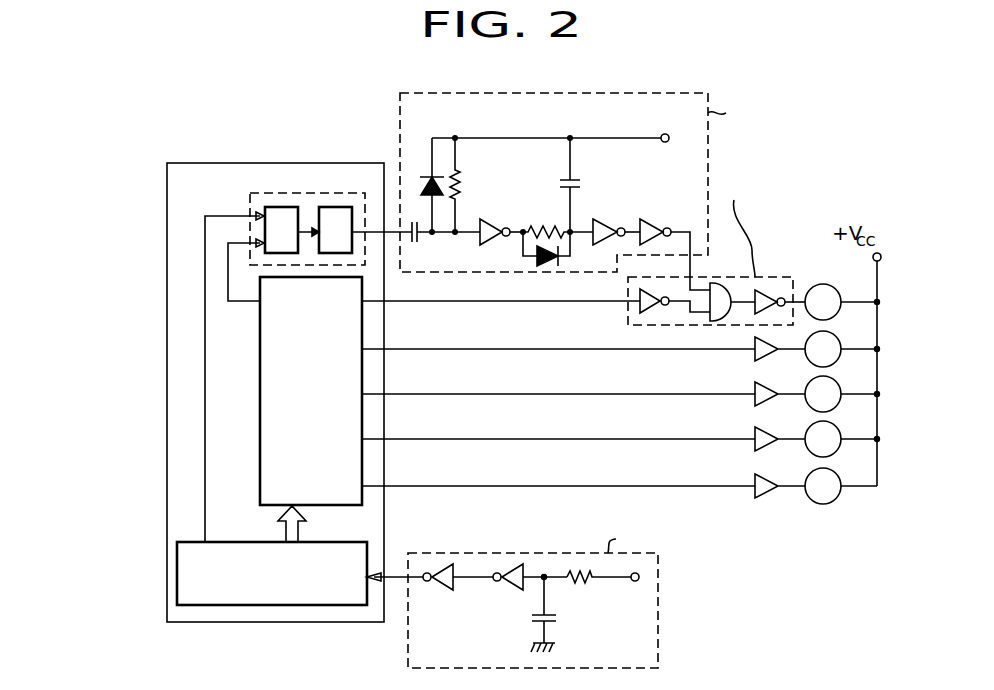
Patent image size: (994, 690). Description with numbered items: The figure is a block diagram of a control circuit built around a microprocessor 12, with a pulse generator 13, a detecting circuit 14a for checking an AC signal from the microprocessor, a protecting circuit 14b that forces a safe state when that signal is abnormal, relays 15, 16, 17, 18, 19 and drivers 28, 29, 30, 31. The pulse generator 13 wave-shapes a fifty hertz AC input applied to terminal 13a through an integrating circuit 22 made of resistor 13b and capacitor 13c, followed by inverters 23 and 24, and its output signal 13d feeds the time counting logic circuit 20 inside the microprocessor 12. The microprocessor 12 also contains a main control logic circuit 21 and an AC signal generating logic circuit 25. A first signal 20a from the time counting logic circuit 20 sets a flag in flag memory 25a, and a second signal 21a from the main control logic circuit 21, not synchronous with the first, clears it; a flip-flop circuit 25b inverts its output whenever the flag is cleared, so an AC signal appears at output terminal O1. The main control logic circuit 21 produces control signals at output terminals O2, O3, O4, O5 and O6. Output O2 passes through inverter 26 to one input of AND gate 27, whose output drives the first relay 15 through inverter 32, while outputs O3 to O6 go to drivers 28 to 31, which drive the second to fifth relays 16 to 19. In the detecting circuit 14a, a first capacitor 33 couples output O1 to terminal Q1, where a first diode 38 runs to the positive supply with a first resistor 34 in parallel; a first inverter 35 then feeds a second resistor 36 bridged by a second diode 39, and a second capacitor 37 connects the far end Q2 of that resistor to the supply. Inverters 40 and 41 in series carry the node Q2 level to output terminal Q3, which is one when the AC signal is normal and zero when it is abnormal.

The microprocessor 12 is at (185, 163).
The AC signal generating logic circuit 25 is at (322, 193).
The flag memory 25a is at (283, 207).
The flip-flop circuit 25b is at (338, 207).
The first signal 20a is at (205, 222).
The second signal 21a is at (228, 272).
The main control logic circuit 21 is at (260, 404).
The time counting logic circuit 20 is at (331, 542).
The output terminal O1 is at (378, 236).
The output terminal O2 is at (400, 303).
The output terminal O3 is at (400, 351).
The output terminal O4 is at (400, 396).
The output terminal O5 is at (400, 441).
The output terminal O6 is at (400, 488).
The detecting circuit 14a is at (633, 93).
The first capacitor 33 is at (422, 236).
The terminal Q1 is at (436, 236).
The first diode 38 is at (430, 180).
The first resistor 34 is at (462, 184).
The first inverter 35 is at (492, 222).
The second resistor 36 is at (538, 226).
The second diode 39 is at (552, 266).
The second capacitor 37 is at (580, 184).
The terminal Q2 is at (574, 238).
The second inverter 40 is at (606, 222).
The fourth inverter 41 is at (654, 222).
The output terminal Q3 is at (690, 268).
The protecting circuit 14b is at (793, 277).
The inverter 26 is at (652, 313).
The AND gate 27 is at (718, 321).
The inverter 32 is at (766, 290).
The first relay 15 is at (836, 292).
The second relay 16 is at (836, 339).
The third relay 17 is at (836, 384).
The fourth relay 18 is at (836, 429).
The fifth relay 19 is at (836, 477).
The driver 28 is at (760, 357).
The driver 29 is at (760, 402).
The driver 30 is at (760, 447).
The driver 31 is at (760, 494).
The pulse generator 13 is at (634, 600).
The terminal 13a is at (634, 582).
The resistor 13b is at (588, 583).
The capacitor 13c is at (550, 625).
The output signal 13d is at (392, 579).
The integrating circuit 22 is at (558, 591).
The inverter 23 is at (510, 590).
The inverter 24 is at (445, 590).